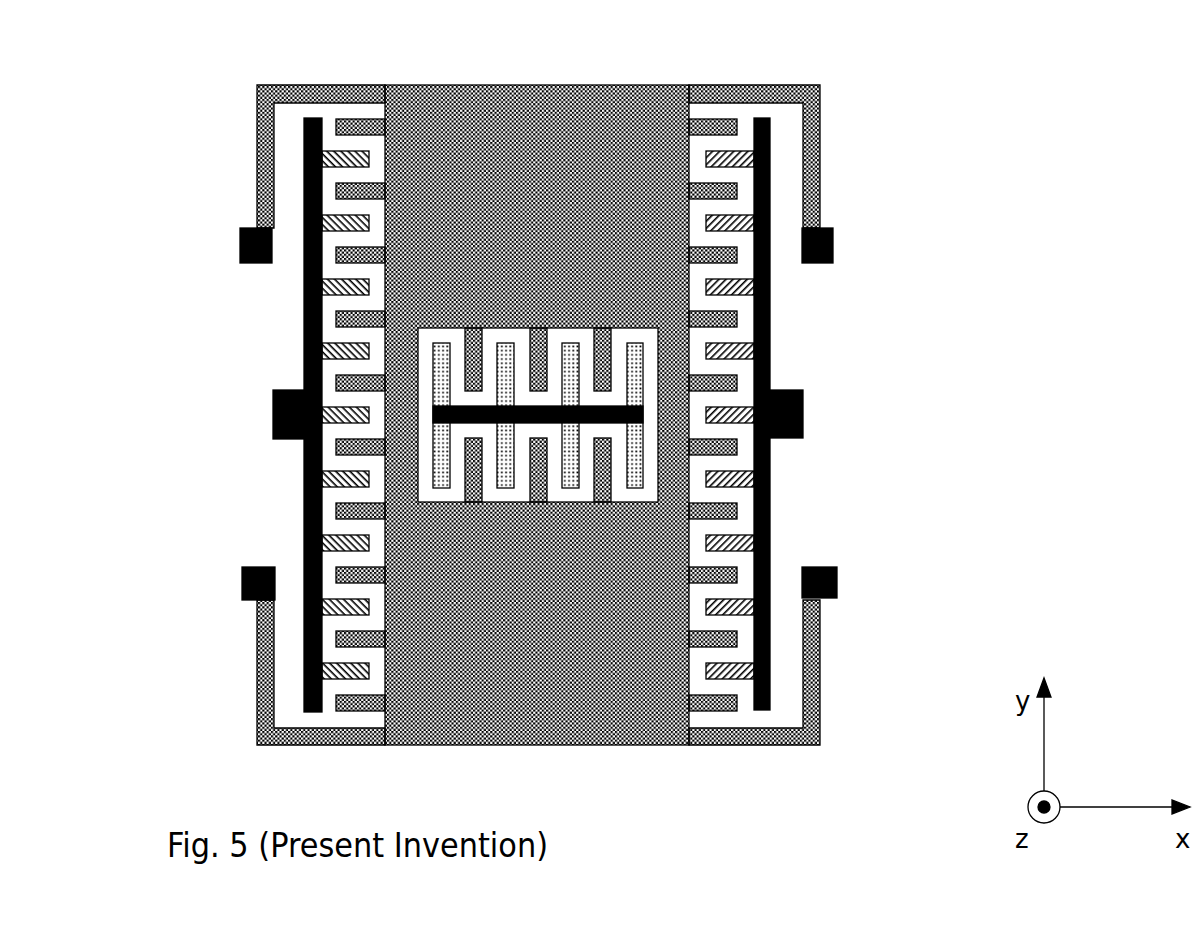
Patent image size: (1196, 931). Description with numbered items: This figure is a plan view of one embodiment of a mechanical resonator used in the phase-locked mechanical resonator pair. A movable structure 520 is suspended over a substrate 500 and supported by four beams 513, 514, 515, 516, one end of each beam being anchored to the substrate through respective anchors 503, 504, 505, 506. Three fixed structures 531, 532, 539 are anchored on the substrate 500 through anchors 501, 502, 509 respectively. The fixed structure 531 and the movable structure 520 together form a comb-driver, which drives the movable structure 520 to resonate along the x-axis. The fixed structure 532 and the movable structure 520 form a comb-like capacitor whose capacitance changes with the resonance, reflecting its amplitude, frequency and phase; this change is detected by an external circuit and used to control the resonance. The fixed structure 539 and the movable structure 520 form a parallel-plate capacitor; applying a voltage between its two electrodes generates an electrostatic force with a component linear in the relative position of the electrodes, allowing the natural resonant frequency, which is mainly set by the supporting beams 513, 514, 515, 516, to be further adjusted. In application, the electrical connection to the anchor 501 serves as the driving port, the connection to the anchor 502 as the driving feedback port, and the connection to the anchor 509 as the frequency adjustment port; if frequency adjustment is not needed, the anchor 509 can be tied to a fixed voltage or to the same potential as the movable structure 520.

The substrate 500 is at (420, 385).
The anchor 501 is at (273, 409).
The anchor 502 is at (803, 407).
The anchor 503 is at (242, 583).
The anchor 504 is at (835, 583).
The anchor 505 is at (833, 247).
The anchor 506 is at (242, 250).
The anchor 509 is at (483, 406).
The beam 513 is at (258, 668).
The beam 514 is at (820, 663).
The beam 515 is at (819, 150).
The beam 516 is at (256, 150).
The movable structure 520 is at (705, 392).
The fixed structure 531 is at (340, 232).
The fixed structure 532 is at (740, 232).
The fixed structure 539 is at (448, 358).